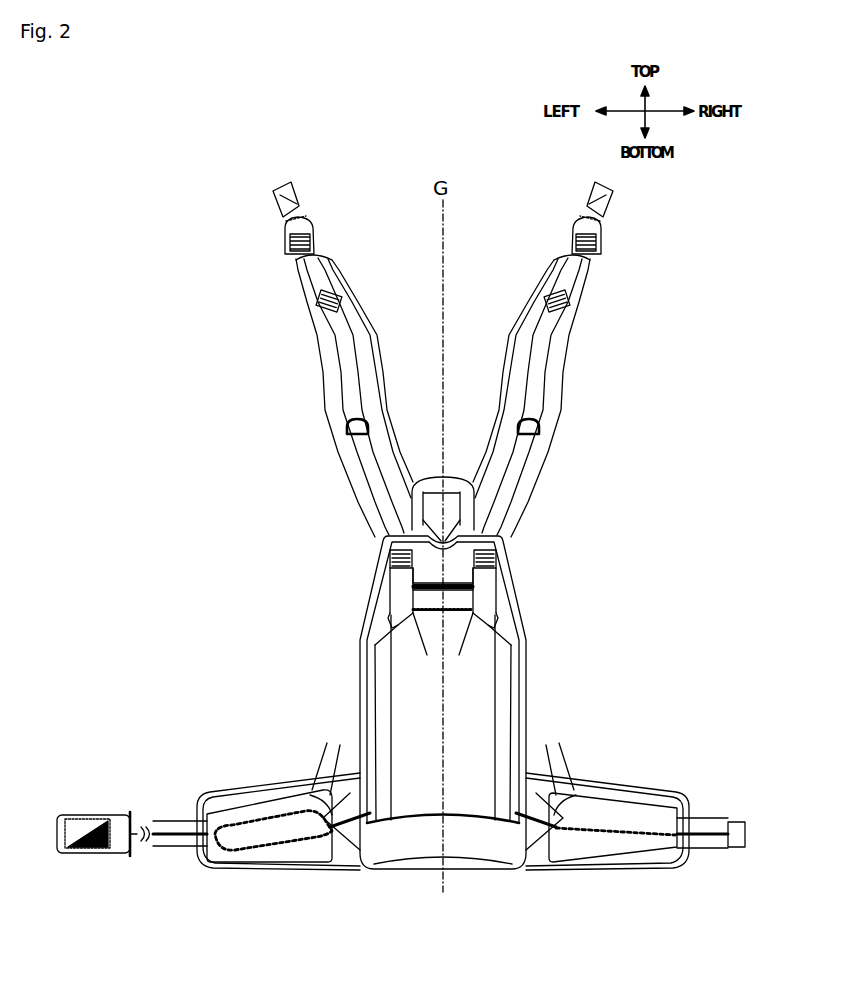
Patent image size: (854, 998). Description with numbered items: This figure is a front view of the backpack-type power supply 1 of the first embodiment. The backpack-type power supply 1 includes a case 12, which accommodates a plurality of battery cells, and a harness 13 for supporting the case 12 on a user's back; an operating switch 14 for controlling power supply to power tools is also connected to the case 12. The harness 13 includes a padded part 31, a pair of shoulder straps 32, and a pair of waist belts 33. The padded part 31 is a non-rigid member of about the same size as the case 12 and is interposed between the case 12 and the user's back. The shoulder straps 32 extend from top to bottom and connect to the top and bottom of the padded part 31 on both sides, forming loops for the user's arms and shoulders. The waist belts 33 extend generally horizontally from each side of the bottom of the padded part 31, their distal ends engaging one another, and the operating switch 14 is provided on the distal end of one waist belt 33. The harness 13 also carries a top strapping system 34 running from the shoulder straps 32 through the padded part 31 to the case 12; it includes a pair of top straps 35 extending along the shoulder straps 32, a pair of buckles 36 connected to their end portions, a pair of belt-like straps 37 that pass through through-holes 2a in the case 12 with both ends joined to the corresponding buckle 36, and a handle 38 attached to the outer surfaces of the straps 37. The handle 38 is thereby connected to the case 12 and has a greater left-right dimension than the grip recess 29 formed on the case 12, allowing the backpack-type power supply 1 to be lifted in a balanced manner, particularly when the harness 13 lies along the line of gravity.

The backpack-type power supply 1 is at (628, 307).
The through-holes 2a is at (390, 622).
The case 12 is at (372, 690).
The harness 13 is at (562, 404).
The operating switch 14 is at (97, 814).
The grip recess 29 is at (440, 650).
The padded part 31 is at (500, 610).
The shoulder straps 32 is at (345, 428).
The waist belts 33 is at (238, 790).
The top strapping system 34 is at (514, 563).
The top straps 35 is at (366, 482).
The buckles 36 is at (388, 562).
The straps 37 is at (388, 586).
The handle 38 is at (424, 572).